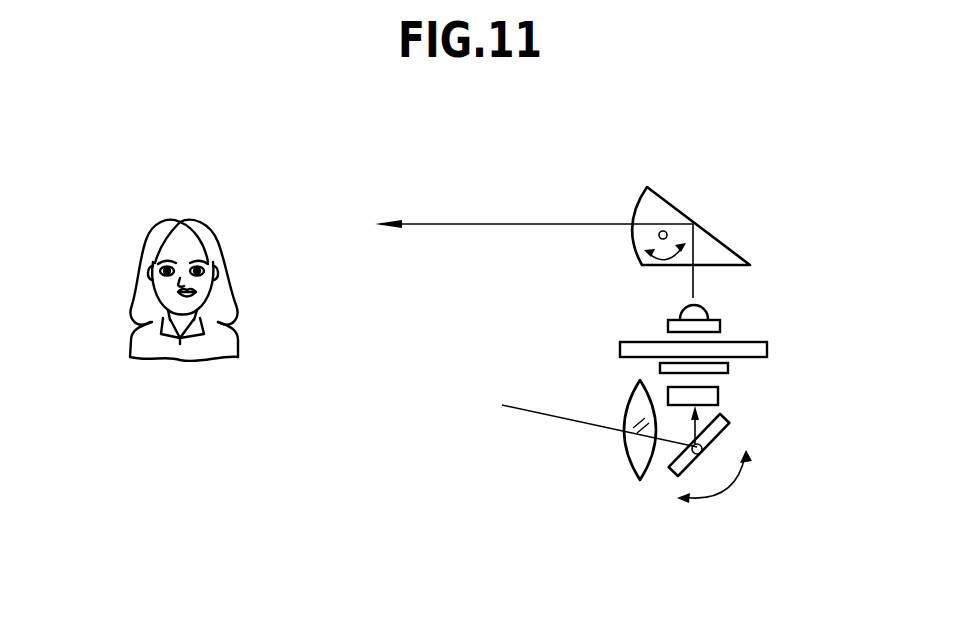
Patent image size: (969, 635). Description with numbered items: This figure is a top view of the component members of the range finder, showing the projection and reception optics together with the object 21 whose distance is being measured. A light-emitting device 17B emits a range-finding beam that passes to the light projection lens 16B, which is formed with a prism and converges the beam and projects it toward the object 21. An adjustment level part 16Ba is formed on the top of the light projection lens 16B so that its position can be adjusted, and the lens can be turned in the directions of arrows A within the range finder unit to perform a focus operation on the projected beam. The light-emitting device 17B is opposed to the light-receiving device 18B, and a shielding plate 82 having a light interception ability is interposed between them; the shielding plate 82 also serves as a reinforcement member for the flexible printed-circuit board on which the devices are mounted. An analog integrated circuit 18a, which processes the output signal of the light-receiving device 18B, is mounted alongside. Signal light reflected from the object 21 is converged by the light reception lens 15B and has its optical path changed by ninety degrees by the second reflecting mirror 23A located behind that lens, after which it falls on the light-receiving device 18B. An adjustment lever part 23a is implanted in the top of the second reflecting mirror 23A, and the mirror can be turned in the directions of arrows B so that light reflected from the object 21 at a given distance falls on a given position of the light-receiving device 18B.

The object 21 is at (222, 247).
The light projection lens 16B is at (658, 205).
The adjustment level part 16Ba is at (660, 232).
The arrows A is at (668, 258).
The light-emitting device 17B is at (712, 315).
The shielding plate 82 is at (628, 342).
The analog integrated circuit 18a is at (728, 367).
The light-receiving device 18B is at (718, 395).
The light reception lens 15B is at (635, 458).
The second reflecting mirror 23A is at (697, 447).
The adjustment lever part 23a is at (698, 460).
The arrows B is at (714, 482).